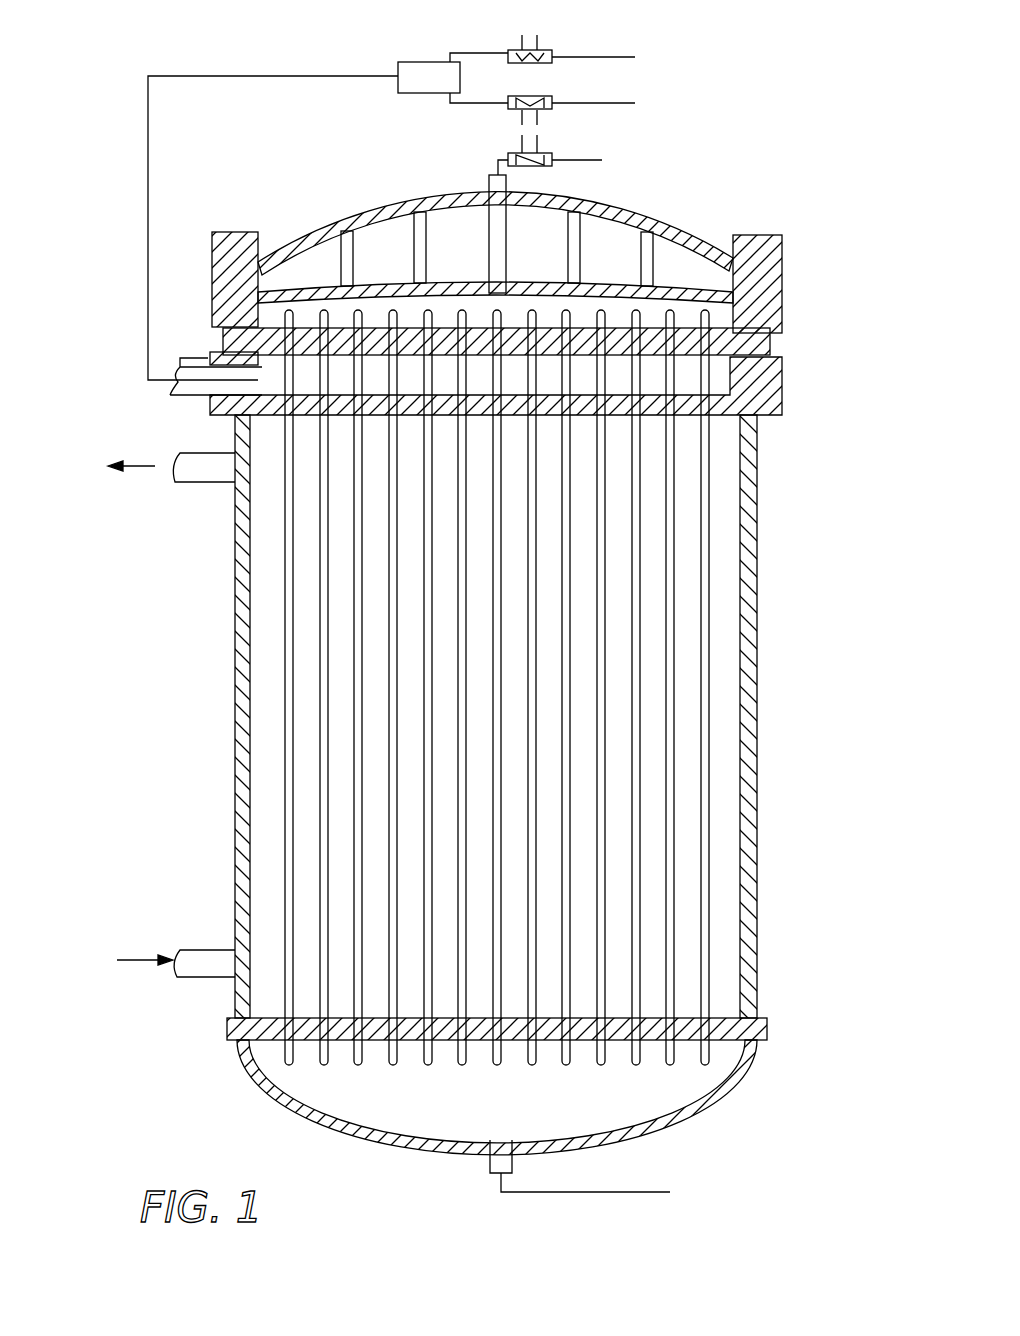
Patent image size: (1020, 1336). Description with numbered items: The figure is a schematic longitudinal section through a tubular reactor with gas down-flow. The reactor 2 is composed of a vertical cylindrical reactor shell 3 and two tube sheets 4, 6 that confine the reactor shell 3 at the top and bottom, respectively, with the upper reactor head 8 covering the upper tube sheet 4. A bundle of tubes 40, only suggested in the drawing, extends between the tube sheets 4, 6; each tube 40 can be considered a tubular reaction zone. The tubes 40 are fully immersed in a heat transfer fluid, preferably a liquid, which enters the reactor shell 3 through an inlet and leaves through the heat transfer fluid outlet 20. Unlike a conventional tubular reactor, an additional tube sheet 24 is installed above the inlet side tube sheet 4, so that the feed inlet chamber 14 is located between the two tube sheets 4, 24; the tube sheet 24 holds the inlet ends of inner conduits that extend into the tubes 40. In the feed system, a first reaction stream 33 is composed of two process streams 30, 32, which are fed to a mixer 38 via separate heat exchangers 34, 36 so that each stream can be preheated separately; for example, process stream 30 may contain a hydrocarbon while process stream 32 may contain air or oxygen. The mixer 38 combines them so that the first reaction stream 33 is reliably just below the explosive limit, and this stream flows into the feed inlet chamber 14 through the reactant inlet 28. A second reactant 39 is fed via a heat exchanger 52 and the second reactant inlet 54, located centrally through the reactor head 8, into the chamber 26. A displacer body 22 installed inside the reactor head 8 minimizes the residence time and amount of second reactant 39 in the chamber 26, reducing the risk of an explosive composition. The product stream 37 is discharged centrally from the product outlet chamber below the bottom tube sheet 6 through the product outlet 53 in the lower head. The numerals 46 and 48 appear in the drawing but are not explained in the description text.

The reactor 2 is at (757, 520).
The reactor shell 3 is at (745, 605).
The tube sheet 4 is at (740, 452).
The tube sheet 6 is at (700, 1018).
The reactor head 8 is at (645, 250).
The feed inlet chamber 14 is at (688, 382).
The heat transfer fluid outlet 20 is at (215, 485).
The displacer body 22 is at (370, 285).
The tube sheet 24 is at (770, 335).
The chamber 26 is at (650, 315).
The reactant inlet 28 is at (208, 400).
The process stream 30 is at (634, 57).
The process stream 32 is at (634, 103).
The first reaction stream 33 is at (237, 75).
The heat exchanger 34 is at (548, 50).
The heat exchanger 36 is at (547, 95).
The product stream 37 is at (605, 1192).
The mixer 38 is at (423, 62).
The second reactant 39 is at (602, 160).
The tubes 40 is at (712, 707).
The lower head 46 is at (713, 1070).
The inlet pipe 48 is at (221, 950).
The heat exchanger 52 is at (550, 153).
The product outlet 53 is at (488, 1158).
The second reactant inlet 54 is at (489, 190).